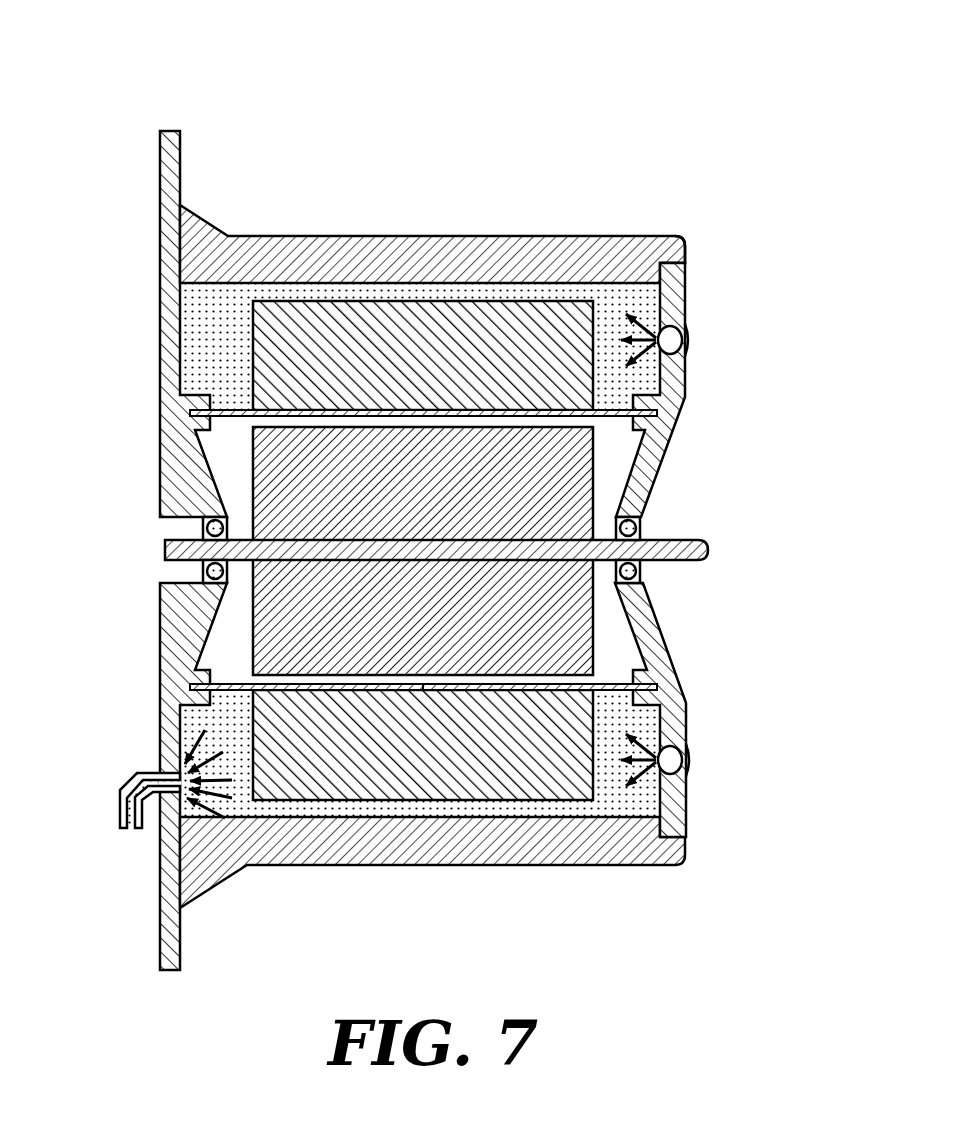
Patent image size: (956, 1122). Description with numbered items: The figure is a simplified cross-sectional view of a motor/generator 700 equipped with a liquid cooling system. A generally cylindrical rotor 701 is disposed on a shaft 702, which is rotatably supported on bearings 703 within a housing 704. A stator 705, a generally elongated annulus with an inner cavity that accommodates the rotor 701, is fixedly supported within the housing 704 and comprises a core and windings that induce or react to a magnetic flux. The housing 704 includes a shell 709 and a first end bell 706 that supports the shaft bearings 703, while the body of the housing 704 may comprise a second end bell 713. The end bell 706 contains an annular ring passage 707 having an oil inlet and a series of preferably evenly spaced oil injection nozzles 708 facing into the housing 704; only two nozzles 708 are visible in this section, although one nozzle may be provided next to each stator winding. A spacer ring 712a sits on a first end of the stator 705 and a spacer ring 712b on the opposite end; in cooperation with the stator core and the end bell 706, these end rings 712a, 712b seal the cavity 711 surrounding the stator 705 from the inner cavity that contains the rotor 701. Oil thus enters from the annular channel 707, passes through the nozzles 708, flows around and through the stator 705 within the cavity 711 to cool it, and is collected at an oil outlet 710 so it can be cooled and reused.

The motor/generator 700 is at (126, 99).
The rotor 701 is at (358, 440).
The shaft 702 is at (707, 550).
The bearings 703 is at (641, 528).
The housing 704 is at (263, 243).
The stator 705 is at (518, 316).
The first end bell 706 is at (667, 708).
The annular ring passage 707 is at (680, 348).
The oil injection nozzles 708 is at (662, 340).
The shell 709 is at (677, 252).
The oil outlet 710 is at (120, 812).
The cavity 711 is at (622, 307).
The spacer ring 712a is at (232, 682).
The spacer ring 712b is at (610, 680).
The second end bell 713 is at (182, 493).